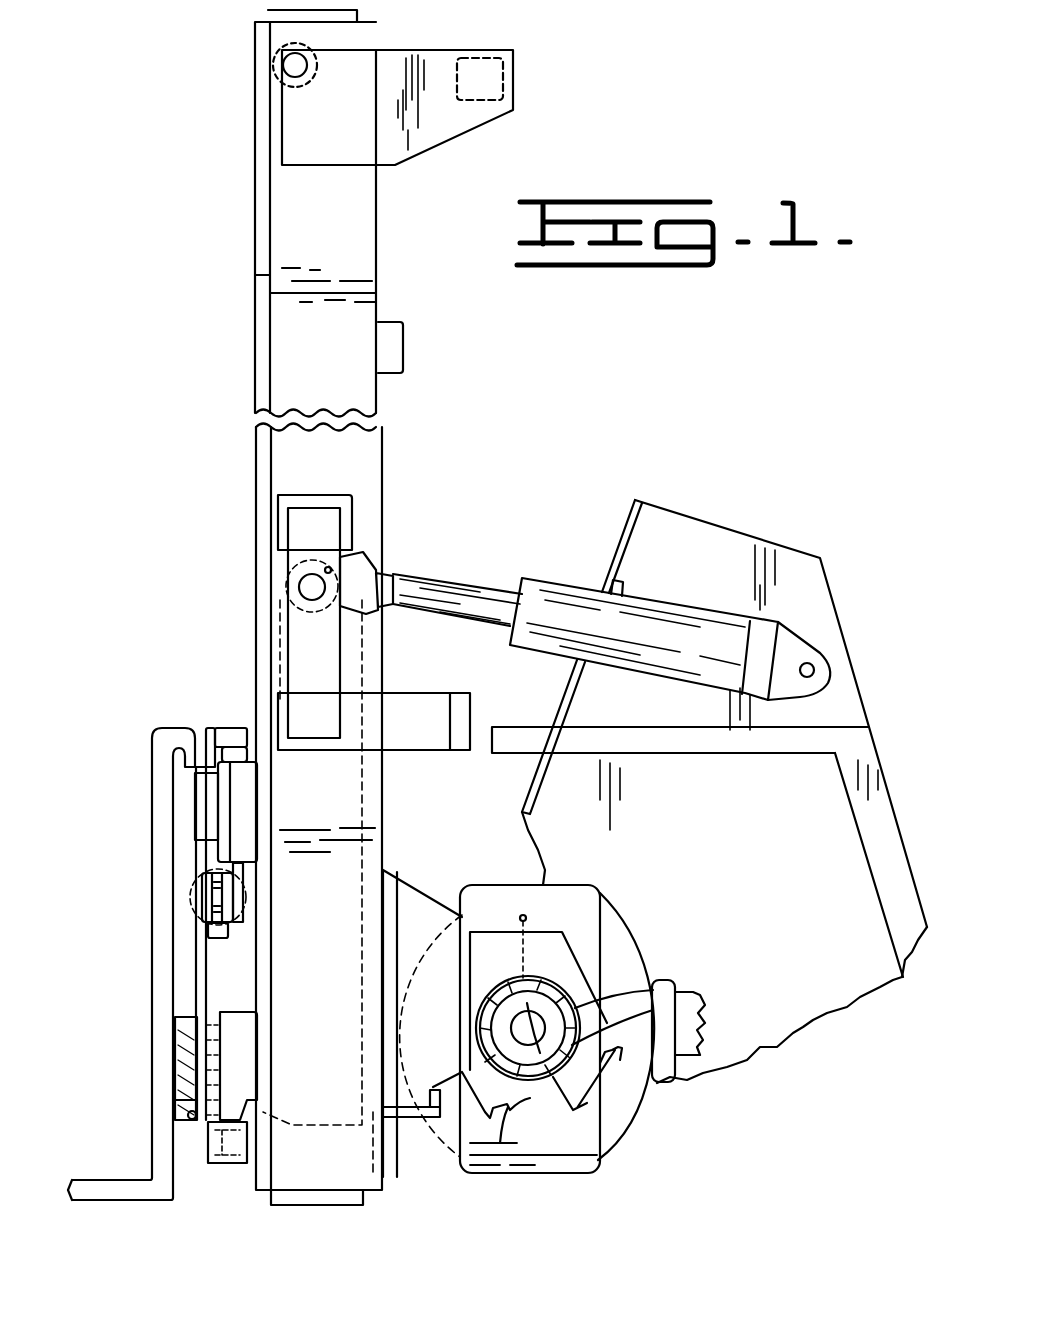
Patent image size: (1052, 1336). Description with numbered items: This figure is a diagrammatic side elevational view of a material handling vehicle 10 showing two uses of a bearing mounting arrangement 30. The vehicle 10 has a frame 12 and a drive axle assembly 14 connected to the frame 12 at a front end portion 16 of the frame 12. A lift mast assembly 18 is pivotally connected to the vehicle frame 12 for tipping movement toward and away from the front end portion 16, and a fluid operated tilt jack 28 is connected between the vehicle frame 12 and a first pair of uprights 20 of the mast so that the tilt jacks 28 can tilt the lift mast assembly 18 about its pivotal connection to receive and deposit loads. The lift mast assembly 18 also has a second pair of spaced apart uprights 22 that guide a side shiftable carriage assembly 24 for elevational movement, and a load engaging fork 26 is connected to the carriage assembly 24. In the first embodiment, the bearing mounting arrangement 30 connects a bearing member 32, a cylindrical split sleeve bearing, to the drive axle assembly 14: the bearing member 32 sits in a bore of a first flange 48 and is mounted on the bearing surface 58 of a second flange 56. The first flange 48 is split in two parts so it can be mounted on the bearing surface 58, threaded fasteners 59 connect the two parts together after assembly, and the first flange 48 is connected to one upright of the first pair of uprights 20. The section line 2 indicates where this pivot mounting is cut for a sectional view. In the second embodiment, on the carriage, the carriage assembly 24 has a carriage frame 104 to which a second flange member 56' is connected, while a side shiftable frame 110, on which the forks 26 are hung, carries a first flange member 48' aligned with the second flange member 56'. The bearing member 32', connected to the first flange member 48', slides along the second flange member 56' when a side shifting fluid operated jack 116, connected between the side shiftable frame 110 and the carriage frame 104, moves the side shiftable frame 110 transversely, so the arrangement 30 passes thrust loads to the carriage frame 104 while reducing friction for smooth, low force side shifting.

The material handling vehicle 10 is at (792, 540).
The frame 12 is at (820, 817).
The drive axle assembly 14 is at (630, 1130).
The front end portion 16 is at (690, 837).
The lift mast assembly 18 is at (500, 383).
The first pair of uprights 20 is at (271, 347).
The second pair of spaced apart uprights 22 is at (256, 380).
The side shiftable carriage assembly 24 is at (212, 708).
The load engaging forks 26 is at (152, 992).
The fluid operated tilt jacks 28 is at (567, 572).
The bearing mounting arrangement 30 is at (615, 974).
The bearing member 32 is at (338, 1101).
The bearing member 32' is at (232, 1035).
The first flange 48 is at (576, 978).
The first flange member 48' is at (134, 1129).
The second flange 56 is at (717, 1019).
The second flange member 56' is at (209, 1186).
The bearing surface 58 is at (657, 985).
The threaded fasteners 59 is at (460, 1078).
The carriage frame 104 is at (210, 855).
The side shiftable frame 110 is at (165, 808).
The side shifting fluid operated jack 116 is at (200, 926).
The section line 2 is at (562, 903).